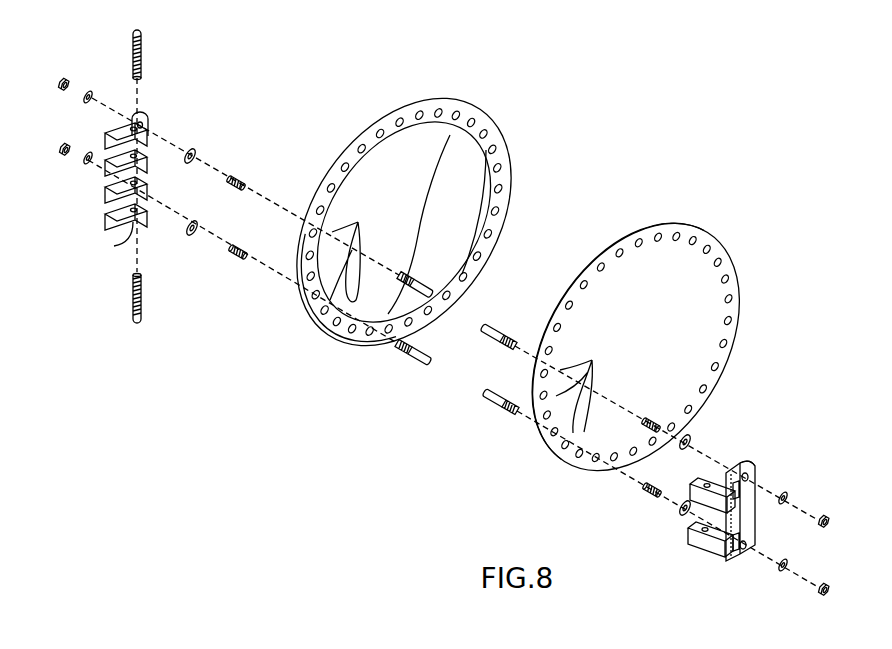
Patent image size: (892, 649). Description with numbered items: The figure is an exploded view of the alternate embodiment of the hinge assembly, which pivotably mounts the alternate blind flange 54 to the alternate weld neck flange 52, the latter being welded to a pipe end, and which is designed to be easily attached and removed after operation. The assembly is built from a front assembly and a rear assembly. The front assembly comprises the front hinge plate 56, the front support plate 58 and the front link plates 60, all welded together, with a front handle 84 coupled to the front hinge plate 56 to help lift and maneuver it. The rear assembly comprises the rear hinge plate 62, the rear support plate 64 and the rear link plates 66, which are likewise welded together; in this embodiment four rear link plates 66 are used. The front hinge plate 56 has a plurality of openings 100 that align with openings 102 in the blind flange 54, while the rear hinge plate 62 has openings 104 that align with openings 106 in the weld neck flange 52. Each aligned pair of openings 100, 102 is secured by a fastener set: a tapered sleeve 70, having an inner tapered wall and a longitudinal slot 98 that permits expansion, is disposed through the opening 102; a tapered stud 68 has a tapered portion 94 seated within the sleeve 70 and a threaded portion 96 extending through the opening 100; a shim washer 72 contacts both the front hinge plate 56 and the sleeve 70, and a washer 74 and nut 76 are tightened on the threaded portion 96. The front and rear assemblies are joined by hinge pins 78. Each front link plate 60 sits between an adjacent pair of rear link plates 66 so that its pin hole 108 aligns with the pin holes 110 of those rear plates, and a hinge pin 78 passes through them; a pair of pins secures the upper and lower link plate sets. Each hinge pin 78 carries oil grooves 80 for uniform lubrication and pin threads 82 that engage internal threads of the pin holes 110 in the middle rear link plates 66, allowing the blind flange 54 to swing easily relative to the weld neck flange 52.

The alternate weld neck flange 52 is at (404, 221).
The alternate blind flange 54 is at (635, 347).
The front hinge plate 56 is at (751, 462).
The front support plate 58 is at (721, 513).
The front link plates 60 is at (695, 497).
The rear hinge plate 62 is at (146, 115).
The rear support plate 64 is at (131, 168).
The rear link plates 66 is at (147, 141).
The tapered stud 68 is at (453, 341).
The tapered sleeve 70 is at (446, 340).
The shim washer 72 is at (197, 156).
The washer 74 is at (84, 101).
The nut 76 is at (60, 84).
The hinge pin 78 is at (141, 191).
The oil grooves 80 is at (133, 56).
The pin threads 82 is at (142, 76).
The front handle 84 is at (756, 521).
The tapered portion 94 is at (426, 297).
The threaded portion 96 is at (413, 278).
The slot 98 is at (243, 180).
The openings 100 is at (752, 478).
The openings 102 is at (593, 361).
The openings 104 is at (144, 125).
The openings 106 is at (359, 222).
The pin hole 108 is at (709, 482).
The pin holes 110 is at (116, 244).